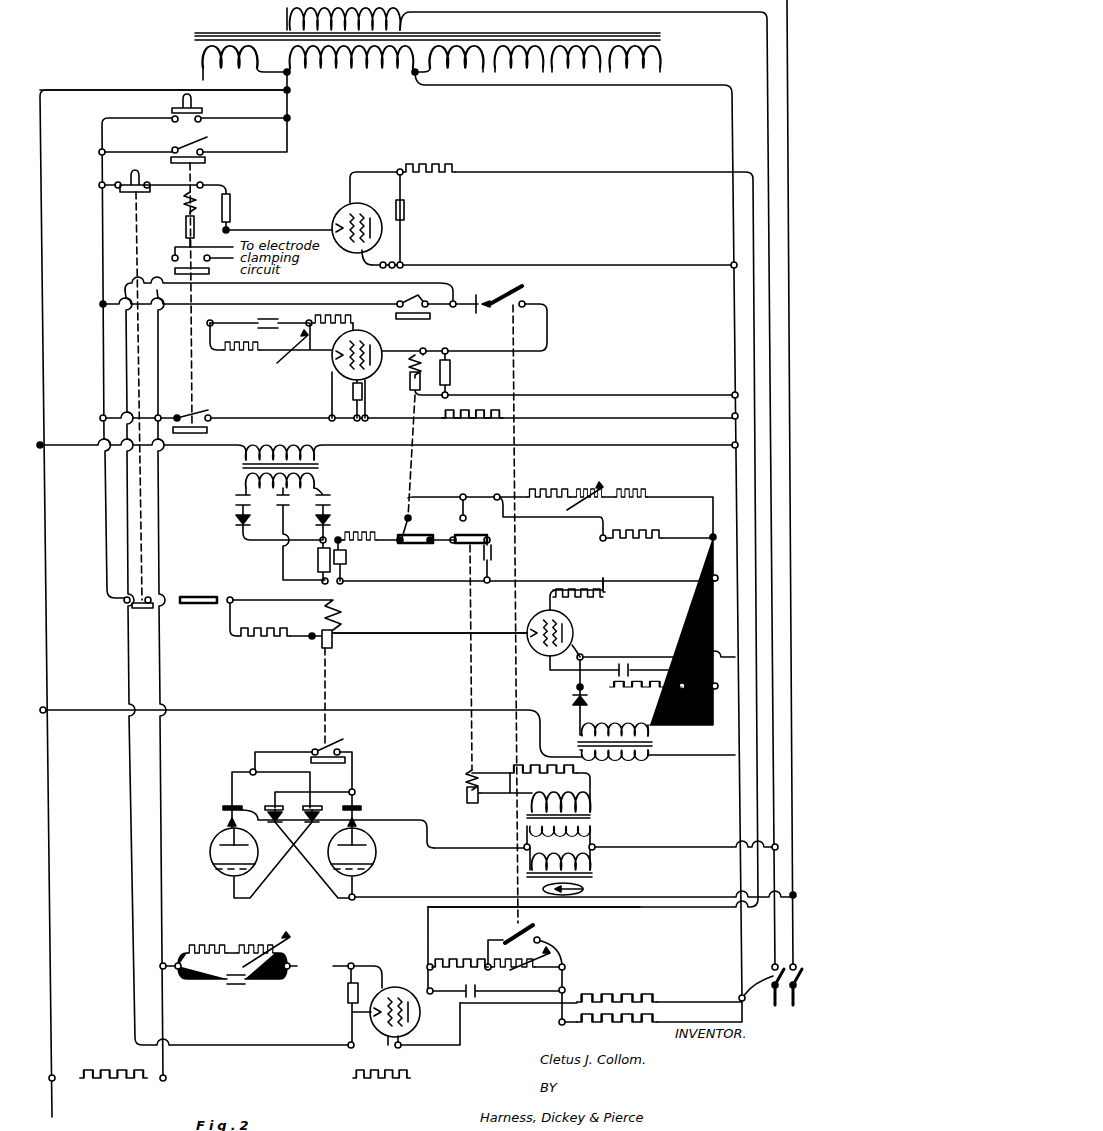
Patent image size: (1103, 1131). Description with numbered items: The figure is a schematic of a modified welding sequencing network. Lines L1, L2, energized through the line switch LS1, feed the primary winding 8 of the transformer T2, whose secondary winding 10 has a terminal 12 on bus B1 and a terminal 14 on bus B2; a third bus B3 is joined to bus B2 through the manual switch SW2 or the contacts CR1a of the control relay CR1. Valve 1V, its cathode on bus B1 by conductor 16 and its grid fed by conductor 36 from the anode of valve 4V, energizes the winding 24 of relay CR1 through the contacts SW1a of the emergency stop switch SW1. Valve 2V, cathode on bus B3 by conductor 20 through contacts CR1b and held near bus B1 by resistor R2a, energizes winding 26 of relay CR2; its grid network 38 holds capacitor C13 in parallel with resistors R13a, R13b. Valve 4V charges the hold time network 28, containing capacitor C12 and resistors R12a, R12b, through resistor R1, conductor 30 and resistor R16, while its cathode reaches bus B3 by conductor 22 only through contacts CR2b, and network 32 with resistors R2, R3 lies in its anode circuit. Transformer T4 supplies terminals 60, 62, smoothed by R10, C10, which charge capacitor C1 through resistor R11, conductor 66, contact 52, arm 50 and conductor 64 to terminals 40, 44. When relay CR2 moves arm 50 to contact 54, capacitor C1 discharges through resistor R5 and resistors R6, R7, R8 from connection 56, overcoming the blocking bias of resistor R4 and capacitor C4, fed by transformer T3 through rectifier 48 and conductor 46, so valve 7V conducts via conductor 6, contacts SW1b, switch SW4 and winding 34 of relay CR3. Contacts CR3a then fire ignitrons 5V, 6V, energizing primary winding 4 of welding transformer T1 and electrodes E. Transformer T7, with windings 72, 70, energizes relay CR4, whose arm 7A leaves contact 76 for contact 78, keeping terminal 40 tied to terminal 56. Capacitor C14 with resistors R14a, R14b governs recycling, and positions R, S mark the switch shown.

The primary winding 8 is at (285, 13).
The transformer T2 is at (195, 34).
The second terminal 14 is at (290, 74).
The secondary winding 10 is at (350, 62).
The terminal 12 is at (413, 72).
The manually operable switch SW2 is at (200, 112).
The normally open contacts CR1a is at (205, 146).
The emergency stop switch SW1 is at (150, 163).
The normally closed contacts SW1a is at (118, 183).
The control relay CR1 is at (197, 178).
The energizing winding 24 is at (185, 206).
The bus B3 is at (102, 210).
The bus B2 is at (40, 252).
The bus B1 is at (752, 128).
The valve 1V is at (335, 215).
The conductor 36 is at (578, 172).
The conductor 16 is at (573, 265).
The conductor 22 is at (447, 285).
The contacts CR2b is at (400, 300).
The switch position R is at (526, 285).
The switch position S is at (529, 312).
The valve 2V is at (353, 332).
The capacitor C13 is at (263, 328).
The adjustable resistor R13a is at (315, 349).
The resistor R13b is at (271, 353).
The impedance network 38 is at (230, 355).
The energizing winding 26 is at (409, 360).
The contacts CR1b is at (192, 412).
The conductor 20 is at (272, 418).
The control relay CR2 is at (415, 404).
The resistor R2a is at (452, 419).
The transformer T4 is at (243, 470).
The contact 54 is at (408, 518).
The contact 52 is at (404, 534).
The conductor 66 is at (388, 540).
The positive terminal 60 is at (339, 538).
The negative terminal 62 is at (318, 543).
The resistor R10 is at (309, 562).
The capacitor C10 is at (346, 565).
The charging current limiting resistor R11 is at (368, 545).
The switch arm 50 is at (416, 545).
The contact 76 is at (455, 543).
The contact arm 7A is at (463, 537).
The contact 78 is at (475, 508).
The common connection 56 is at (497, 494).
The resistance element R6 is at (540, 482).
The variable resistance element R7 is at (580, 490).
The resistance element R8 is at (630, 490).
The resistor R5 is at (640, 540).
The positive terminal 40 is at (495, 541).
The capacitor C1 is at (498, 550).
The negative terminal 44 is at (495, 578).
The relay CR4 is at (470, 570).
The conductor 64 is at (393, 583).
The energizing winding 34 is at (325, 603).
The weld-no-weld switch SW4 is at (190, 606).
The normally closed contacts SW1b is at (130, 605).
The valve 7V is at (575, 625).
The conductor 46 is at (715, 606).
The conductor 6 is at (645, 657).
The capacitor C4 is at (630, 666).
The relay CR3 is at (327, 675).
The rectifying element 48 is at (590, 702).
The resistor R4 is at (660, 690).
The transformer T3 is at (652, 745).
The normally open contacts CR3a is at (337, 749).
The winding 70 is at (590, 797).
The transformer T7 is at (592, 816).
The primary winding 72 is at (592, 843).
The primary winding 4 is at (593, 858).
The welding transformer T1 is at (595, 878).
The welding electrodes E is at (585, 891).
The ignitron valve 5V is at (212, 838).
The ignitron valve 6V is at (376, 868).
The conductor 30 is at (163, 878).
The hold time network 28 is at (188, 948).
The resistor R12b is at (222, 935).
The adjustable resistor R12a is at (262, 945).
The capacitor C12 is at (240, 986).
The valve 4V is at (401, 988).
The resistor R14b is at (458, 958).
The resistor R14a is at (563, 969).
The impedance network 32 is at (556, 958).
The capacitor C14 is at (478, 990).
The resistor R16 is at (636, 994).
The resistor R3 is at (625, 1023).
The line switch LS1 is at (740, 987).
The electrical line L1 is at (773, 938).
The electrical line L2 is at (793, 918).
The resistor R1 is at (110, 1080).
The resistor R2 is at (385, 1080).